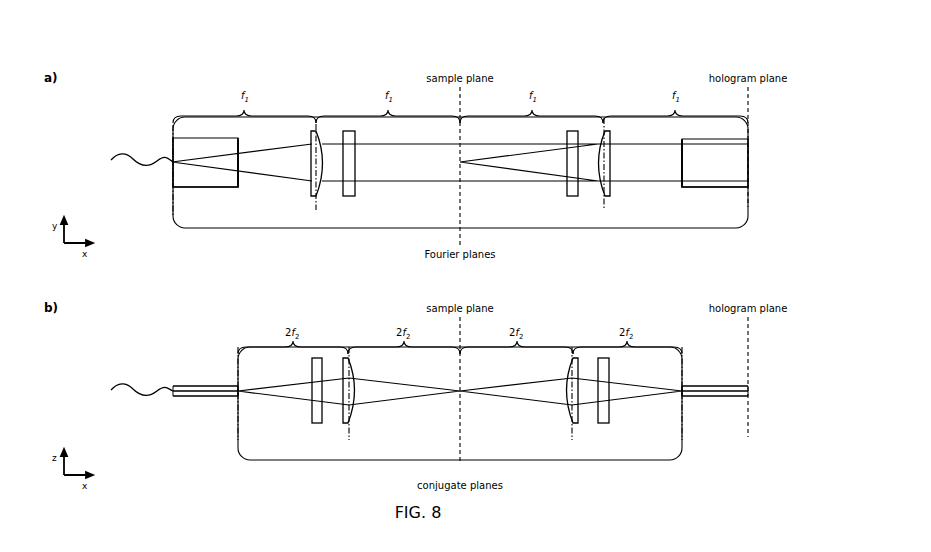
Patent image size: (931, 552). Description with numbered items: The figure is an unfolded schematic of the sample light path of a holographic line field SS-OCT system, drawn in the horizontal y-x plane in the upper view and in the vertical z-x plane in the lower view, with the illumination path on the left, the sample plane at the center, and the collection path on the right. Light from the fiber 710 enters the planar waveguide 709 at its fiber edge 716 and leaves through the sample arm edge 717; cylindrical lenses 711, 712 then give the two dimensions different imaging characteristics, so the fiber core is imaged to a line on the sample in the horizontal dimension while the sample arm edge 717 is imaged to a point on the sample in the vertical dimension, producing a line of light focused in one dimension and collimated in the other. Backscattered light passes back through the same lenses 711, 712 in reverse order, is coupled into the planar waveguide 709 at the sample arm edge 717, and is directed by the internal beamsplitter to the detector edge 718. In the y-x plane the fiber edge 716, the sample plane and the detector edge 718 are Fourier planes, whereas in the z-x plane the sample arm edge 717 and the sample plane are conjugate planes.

The planar waveguide 709 is at (695, 375).
The fiber 710 is at (126, 166).
The cylindrical lens 711 is at (604, 358).
The cylindrical lens 712 is at (572, 347).
The fiber edge 716 is at (171, 386).
The sample arm edge 717 is at (645, 483).
The detector edge 718 is at (780, 462).